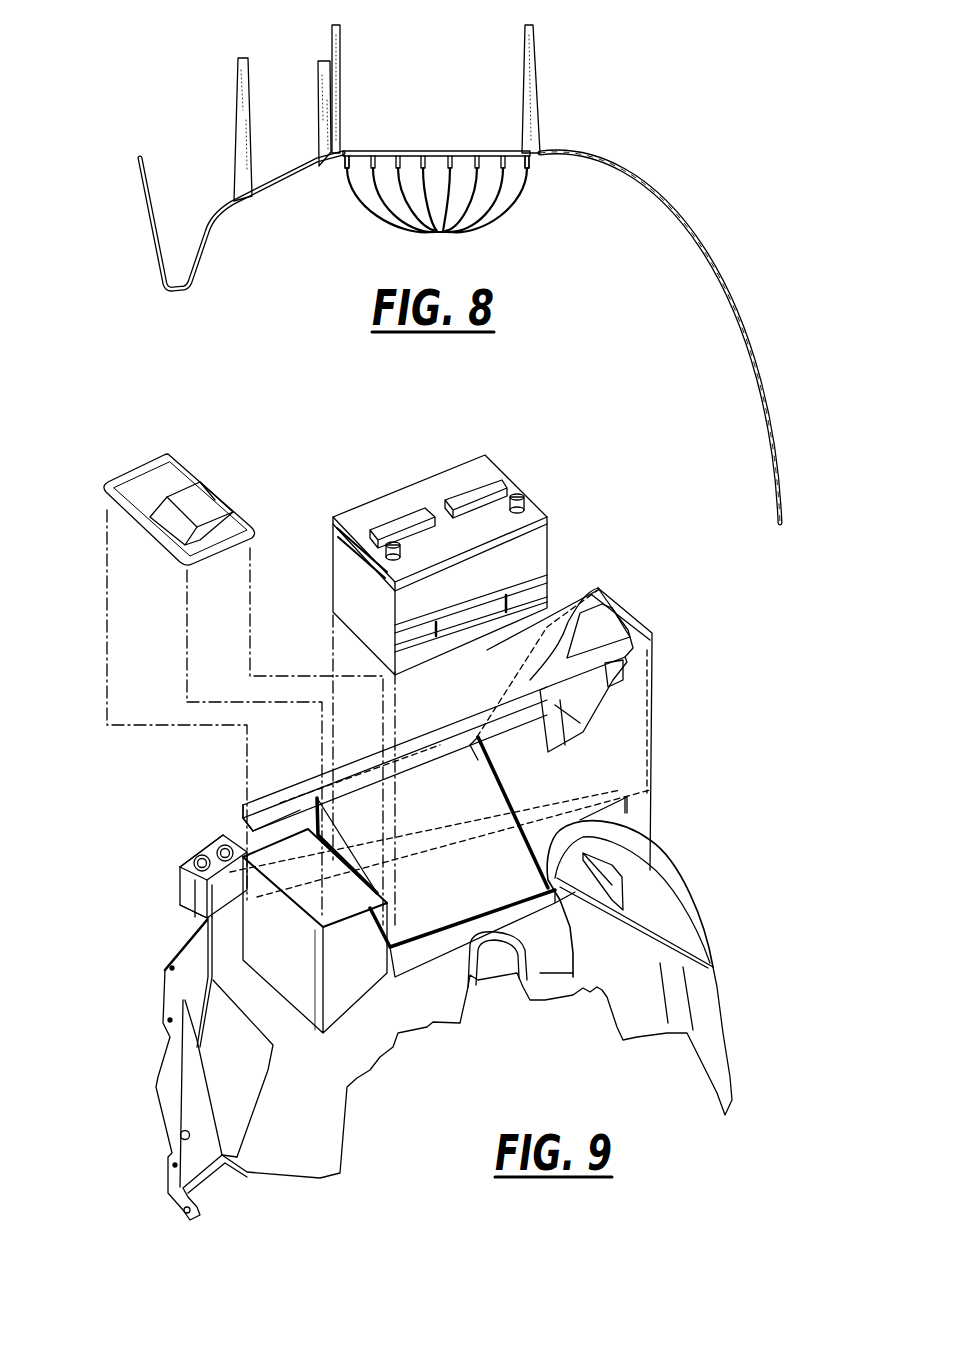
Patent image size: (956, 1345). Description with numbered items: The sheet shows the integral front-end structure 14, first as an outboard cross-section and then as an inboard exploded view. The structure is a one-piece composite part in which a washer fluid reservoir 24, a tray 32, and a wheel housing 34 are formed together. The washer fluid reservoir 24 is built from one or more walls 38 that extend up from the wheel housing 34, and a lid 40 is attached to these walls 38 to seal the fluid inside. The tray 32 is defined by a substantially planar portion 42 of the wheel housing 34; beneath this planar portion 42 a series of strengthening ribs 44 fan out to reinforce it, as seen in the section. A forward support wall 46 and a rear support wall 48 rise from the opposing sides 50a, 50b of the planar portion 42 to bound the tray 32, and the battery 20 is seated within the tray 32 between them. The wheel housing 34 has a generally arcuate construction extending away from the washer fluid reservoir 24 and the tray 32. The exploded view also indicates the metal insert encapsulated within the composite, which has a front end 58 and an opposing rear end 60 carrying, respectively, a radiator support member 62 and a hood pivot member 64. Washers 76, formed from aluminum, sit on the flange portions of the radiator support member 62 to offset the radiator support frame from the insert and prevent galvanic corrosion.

In FIG. 8, the integral front-end structure 14 is at (242, 40).
In FIG. 9, the integral front-end structure 14 is at (75, 822).
In FIG. 9, the battery 20 is at (545, 512).
In FIG. 8, the washer fluid reservoir 24 is at (296, 132).
In FIG. 9, the washer fluid reservoir 24 is at (290, 956).
In FIG. 8, the tray 32 is at (449, 92).
In FIG. 9, the tray 32 is at (462, 896).
In FIG. 8, the wheel housing 34 is at (583, 163).
In FIG. 9, the wheel housing 34 is at (357, 1078).
In FIG. 8, the walls 38 is at (235, 96).
In FIG. 9, the walls 38 is at (343, 1020).
In FIG. 9, the lid 40 is at (107, 487).
In FIG. 8, the planar portion 42 is at (440, 153).
In FIG. 9, the planar portion 42 is at (445, 848).
In FIG. 8, the strengthening ribs 44 is at (436, 244).
In FIG. 8, the forward support wall 46 is at (342, 88).
In FIG. 9, the forward support wall 46 is at (344, 807).
In FIG. 8, the rear support wall 48 is at (520, 88).
In FIG. 9, the rear support wall 48 is at (445, 755).
In FIG. 8, the side of planar portion 50a is at (352, 153).
In FIG. 9, the side of planar portion 50a is at (318, 798).
In FIG. 8, the side of planar portion 50b is at (511, 152).
In FIG. 9, the side of planar portion 50b is at (470, 827).
In FIG. 9, the front end 58 is at (177, 867).
In FIG. 9, the rear end 60 is at (655, 652).
In FIG. 9, the radiator support member 62 is at (177, 897).
In FIG. 9, the hood pivot member 64 is at (603, 590).
In FIG. 9, the washers 76 is at (215, 848).